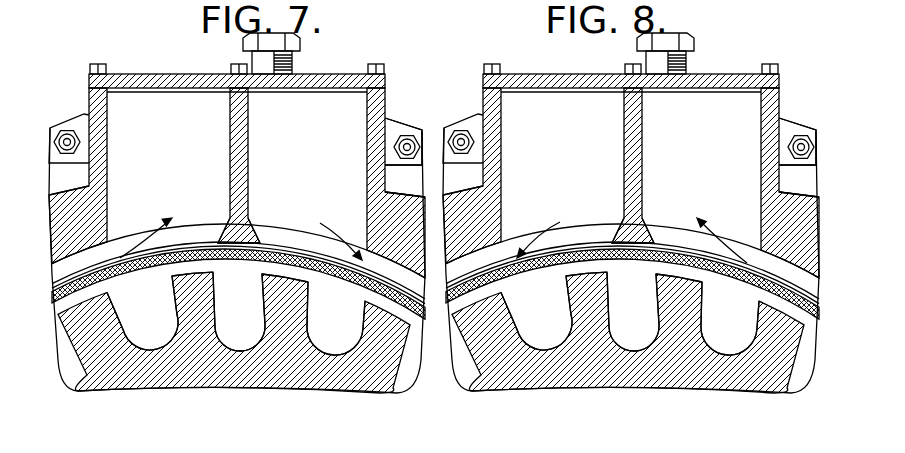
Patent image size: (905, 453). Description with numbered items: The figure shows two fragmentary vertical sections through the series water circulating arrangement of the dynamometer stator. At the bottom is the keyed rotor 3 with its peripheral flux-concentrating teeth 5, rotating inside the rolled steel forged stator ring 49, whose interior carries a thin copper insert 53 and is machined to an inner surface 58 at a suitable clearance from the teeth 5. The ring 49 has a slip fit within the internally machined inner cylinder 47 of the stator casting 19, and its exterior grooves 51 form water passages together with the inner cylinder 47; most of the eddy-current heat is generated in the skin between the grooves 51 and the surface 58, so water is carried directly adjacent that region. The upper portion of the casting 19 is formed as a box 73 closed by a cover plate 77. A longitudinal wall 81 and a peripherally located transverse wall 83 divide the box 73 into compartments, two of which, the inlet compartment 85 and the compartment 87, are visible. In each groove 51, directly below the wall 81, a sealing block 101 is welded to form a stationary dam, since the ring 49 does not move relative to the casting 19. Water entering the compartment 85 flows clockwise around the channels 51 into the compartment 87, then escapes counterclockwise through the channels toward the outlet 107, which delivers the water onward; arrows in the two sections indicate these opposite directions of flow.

In FIG. 7, the rotor 3 is at (228, 385).
In FIG. 8, the rotor 3 is at (628, 349).
In FIG. 7, the flux-concentrating teeth 5 is at (110, 313).
In FIG. 8, the flux-concentrating teeth 5 is at (630, 313).
In FIG. 7, the outer casting 19 is at (387, 200).
In FIG. 8, the outer casting 19 is at (632, 228).
In FIG. 7, the inner cylinder 47 is at (387, 243).
In FIG. 8, the inner cylinder 47 is at (632, 250).
In FIG. 7, the stator ring 49 is at (112, 280).
In FIG. 8, the stator ring 49 is at (632, 284).
In FIG. 7, the grooves 51 is at (199, 238).
In FIG. 8, the grooves 51 is at (631, 211).
In FIG. 7, the copper insert 53 is at (214, 271).
In FIG. 8, the copper insert 53 is at (657, 286).
In FIG. 7, the inner machined surface 58 is at (328, 286).
In FIG. 8, the inner machined surface 58 is at (654, 294).
In FIG. 7, the box 73 is at (374, 106).
In FIG. 8, the box 73 is at (790, 183).
In FIG. 7, the cover plate 77 is at (330, 80).
In FIG. 8, the cover plate 77 is at (631, 60).
In FIG. 7, the longitudinal wall 81 is at (244, 148).
In FIG. 8, the longitudinal wall 81 is at (647, 165).
In FIG. 7, the transverse wall 83 is at (338, 112).
In FIG. 8, the transverse wall 83 is at (708, 132).
In FIG. 7, the inlet compartment 85 is at (388, 120).
In FIG. 8, the inlet compartment 85 is at (805, 151).
In FIG. 7, the compartment 87 is at (133, 120).
In FIG. 8, the compartment 87 is at (478, 173).
In FIG. 7, the sealing block 101 is at (254, 250).
In FIG. 8, the sealing block 101 is at (620, 218).
In FIG. 7, the outlet 107 is at (268, 62).
In FIG. 8, the outlet 107 is at (642, 53).